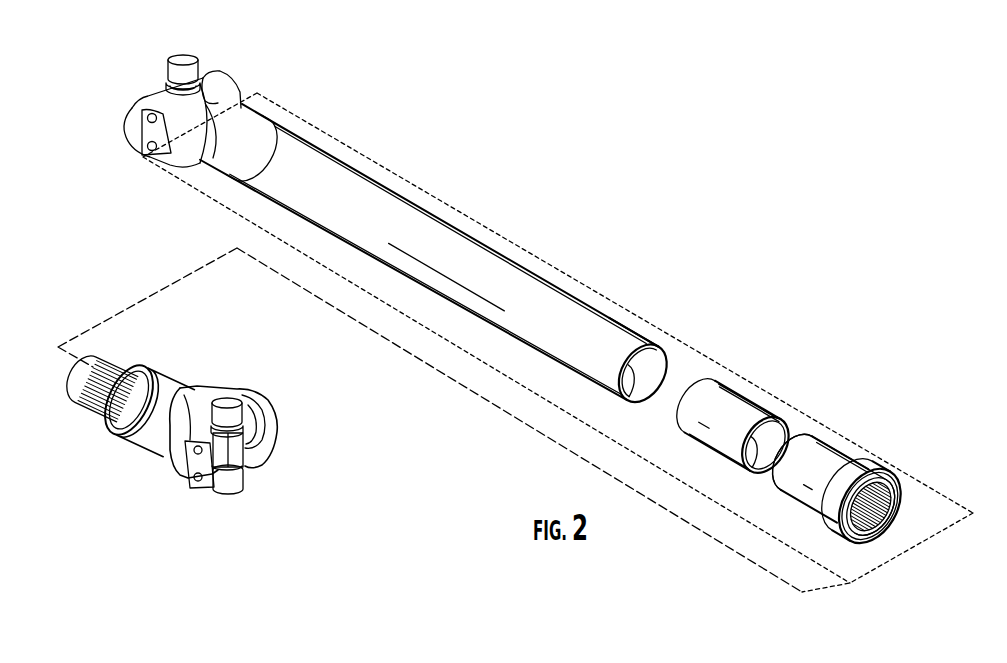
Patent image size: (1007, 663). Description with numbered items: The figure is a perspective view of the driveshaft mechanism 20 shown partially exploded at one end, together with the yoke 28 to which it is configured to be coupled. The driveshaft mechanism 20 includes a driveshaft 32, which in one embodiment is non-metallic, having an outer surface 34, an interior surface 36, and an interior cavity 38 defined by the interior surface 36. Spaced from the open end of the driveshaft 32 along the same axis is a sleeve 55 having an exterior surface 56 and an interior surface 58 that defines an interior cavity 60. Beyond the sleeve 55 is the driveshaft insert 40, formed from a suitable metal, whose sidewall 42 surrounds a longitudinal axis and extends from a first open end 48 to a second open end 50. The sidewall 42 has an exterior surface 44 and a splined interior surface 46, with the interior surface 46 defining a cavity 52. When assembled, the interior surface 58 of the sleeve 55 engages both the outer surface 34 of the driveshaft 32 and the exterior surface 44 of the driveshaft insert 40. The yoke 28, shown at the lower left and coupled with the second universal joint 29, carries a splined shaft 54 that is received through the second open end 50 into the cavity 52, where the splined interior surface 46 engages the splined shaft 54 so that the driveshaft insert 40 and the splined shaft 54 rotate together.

The driveshaft mechanism 20 is at (364, 156).
The driveshaft 32 is at (467, 247).
The outer surface 34 is at (612, 333).
The interior surface 36 is at (657, 370).
The interior cavity 38 is at (641, 398).
The splined shaft 54 is at (140, 366).
The yoke 28 is at (248, 406).
The second universal joint 29 is at (238, 448).
The exterior surface 56 is at (720, 377).
The sleeve 55 is at (732, 393).
The interior surface 58 is at (790, 436).
The interior cavity 60 is at (760, 462).
The driveshaft insert 40 is at (912, 465).
The sidewall 42 is at (832, 460).
The first open end 48 is at (813, 436).
The exterior surface 44 is at (812, 500).
The splined interior surface 46 is at (883, 520).
The second open end 50 is at (877, 538).
The cavity 52 is at (880, 520).